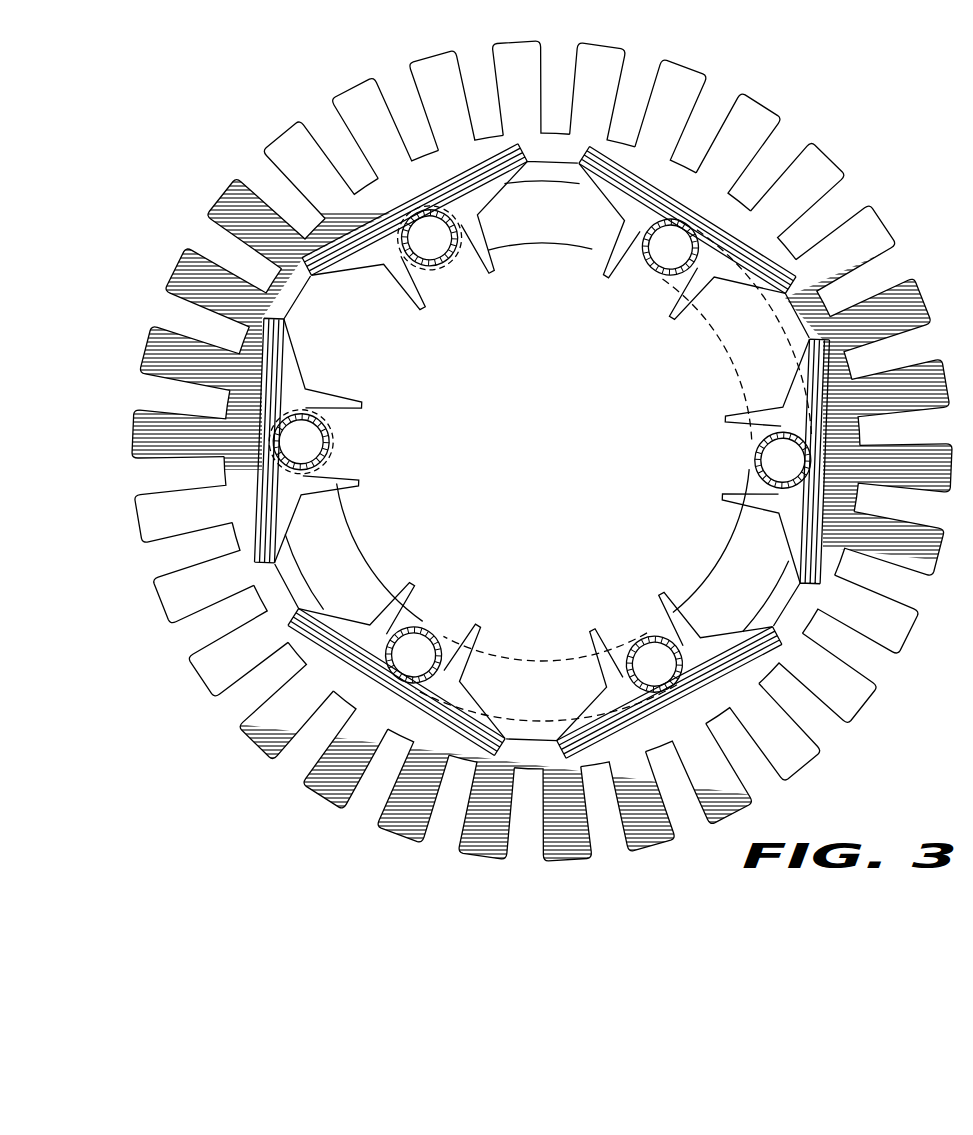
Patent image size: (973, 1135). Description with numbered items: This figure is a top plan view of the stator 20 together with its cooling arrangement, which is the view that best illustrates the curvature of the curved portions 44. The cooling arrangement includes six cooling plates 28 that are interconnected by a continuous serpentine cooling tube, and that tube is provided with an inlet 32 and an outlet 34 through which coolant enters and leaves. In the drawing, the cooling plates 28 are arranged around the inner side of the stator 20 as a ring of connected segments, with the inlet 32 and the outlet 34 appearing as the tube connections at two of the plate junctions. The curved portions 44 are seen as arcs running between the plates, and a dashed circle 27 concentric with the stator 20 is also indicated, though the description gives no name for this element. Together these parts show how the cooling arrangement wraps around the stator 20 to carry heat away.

The stator 20 is at (258, 745).
The bore circle 27 is at (530, 660).
The cooling plates 28 is at (621, 198).
The inlet 32 is at (447, 272).
The outlet 34 is at (330, 440).
The curved portions 44 is at (740, 573).